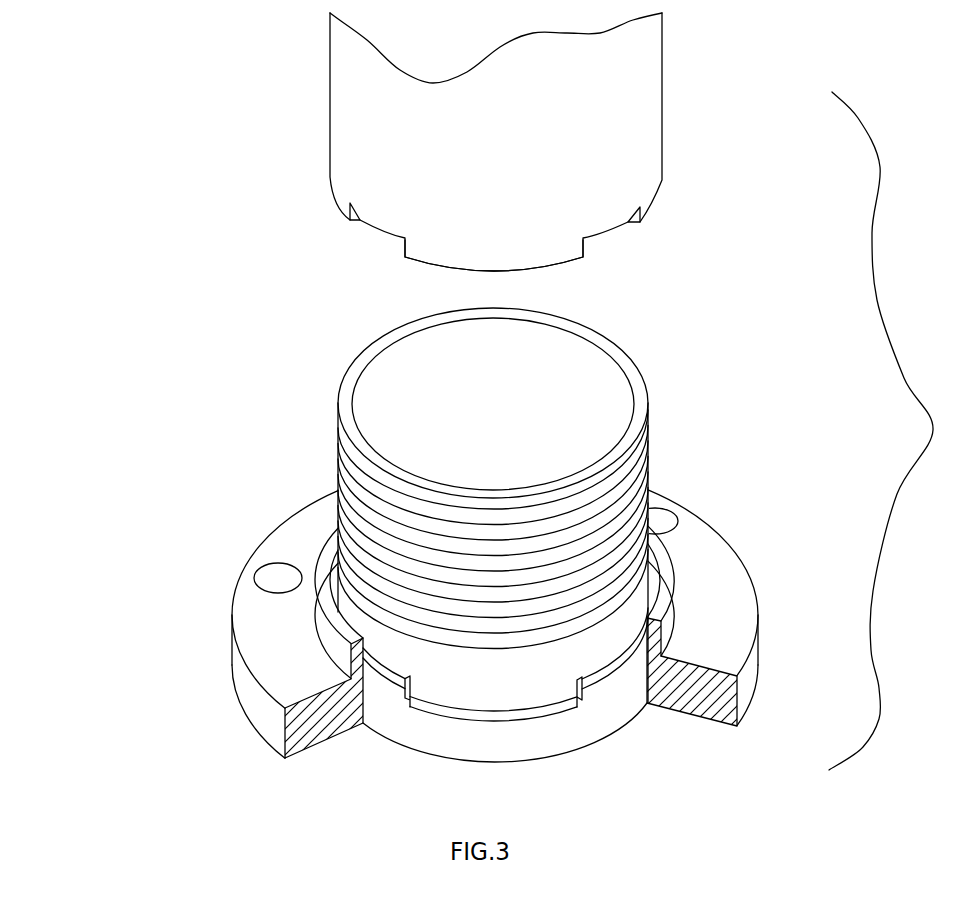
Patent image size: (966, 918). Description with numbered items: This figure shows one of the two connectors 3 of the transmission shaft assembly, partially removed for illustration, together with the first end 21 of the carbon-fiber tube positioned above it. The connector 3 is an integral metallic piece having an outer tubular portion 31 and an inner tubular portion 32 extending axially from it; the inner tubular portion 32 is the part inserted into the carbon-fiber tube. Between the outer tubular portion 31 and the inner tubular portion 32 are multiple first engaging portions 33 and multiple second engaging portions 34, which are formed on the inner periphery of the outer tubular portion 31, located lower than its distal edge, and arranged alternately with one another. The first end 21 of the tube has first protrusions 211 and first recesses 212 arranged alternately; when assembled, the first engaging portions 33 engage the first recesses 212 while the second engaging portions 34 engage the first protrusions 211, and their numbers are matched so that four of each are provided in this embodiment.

The first end 21 is at (552, 125).
The first protrusions 211 is at (490, 273).
The first recesses 212 is at (375, 222).
The connector 3 is at (298, 523).
The outer tubular portion 31 is at (320, 617).
The inner tubular portion 32 is at (355, 370).
The first engaging portions 33 is at (610, 668).
The second engaging portions 34 is at (440, 706).